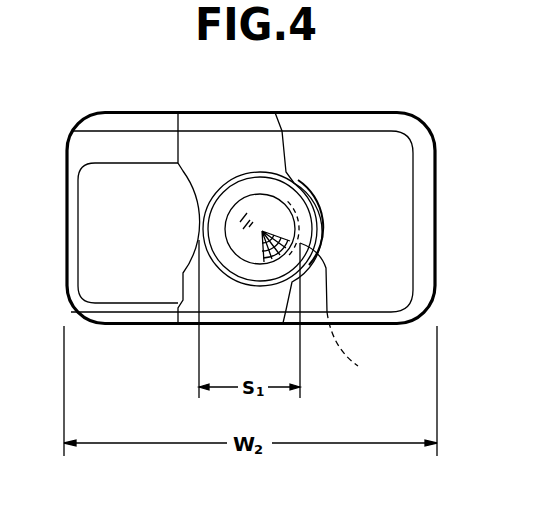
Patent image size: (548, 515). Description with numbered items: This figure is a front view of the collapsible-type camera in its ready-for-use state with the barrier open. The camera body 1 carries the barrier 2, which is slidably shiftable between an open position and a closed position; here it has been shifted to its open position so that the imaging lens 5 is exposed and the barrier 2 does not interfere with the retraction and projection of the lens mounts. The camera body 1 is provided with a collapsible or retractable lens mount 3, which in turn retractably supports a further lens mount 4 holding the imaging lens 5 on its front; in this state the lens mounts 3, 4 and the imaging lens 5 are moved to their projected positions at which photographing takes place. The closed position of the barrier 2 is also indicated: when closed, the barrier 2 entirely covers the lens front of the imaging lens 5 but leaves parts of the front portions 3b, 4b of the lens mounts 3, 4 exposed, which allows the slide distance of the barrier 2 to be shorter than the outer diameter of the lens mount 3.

The camera body 1 is at (397, 120).
The barrier 2 is at (144, 267).
The lens mount 3 is at (245, 172).
The front portion of lens mount 3b is at (320, 210).
The lens mount 4 is at (224, 182).
The front portion of lens mount 4b is at (314, 203).
The imaging lens 5 is at (248, 264).